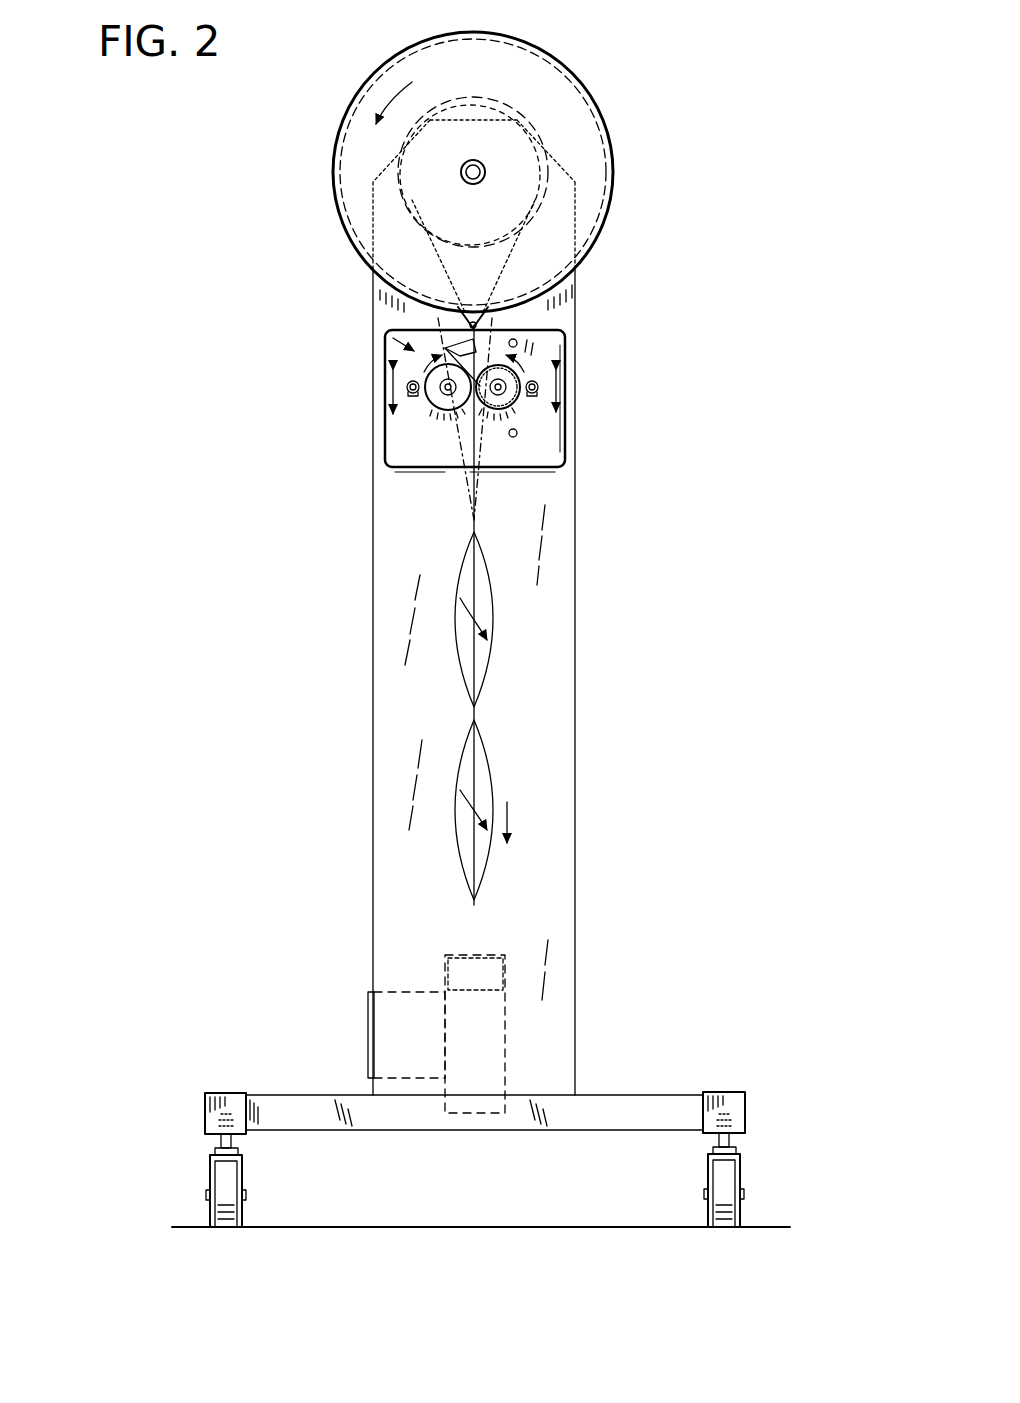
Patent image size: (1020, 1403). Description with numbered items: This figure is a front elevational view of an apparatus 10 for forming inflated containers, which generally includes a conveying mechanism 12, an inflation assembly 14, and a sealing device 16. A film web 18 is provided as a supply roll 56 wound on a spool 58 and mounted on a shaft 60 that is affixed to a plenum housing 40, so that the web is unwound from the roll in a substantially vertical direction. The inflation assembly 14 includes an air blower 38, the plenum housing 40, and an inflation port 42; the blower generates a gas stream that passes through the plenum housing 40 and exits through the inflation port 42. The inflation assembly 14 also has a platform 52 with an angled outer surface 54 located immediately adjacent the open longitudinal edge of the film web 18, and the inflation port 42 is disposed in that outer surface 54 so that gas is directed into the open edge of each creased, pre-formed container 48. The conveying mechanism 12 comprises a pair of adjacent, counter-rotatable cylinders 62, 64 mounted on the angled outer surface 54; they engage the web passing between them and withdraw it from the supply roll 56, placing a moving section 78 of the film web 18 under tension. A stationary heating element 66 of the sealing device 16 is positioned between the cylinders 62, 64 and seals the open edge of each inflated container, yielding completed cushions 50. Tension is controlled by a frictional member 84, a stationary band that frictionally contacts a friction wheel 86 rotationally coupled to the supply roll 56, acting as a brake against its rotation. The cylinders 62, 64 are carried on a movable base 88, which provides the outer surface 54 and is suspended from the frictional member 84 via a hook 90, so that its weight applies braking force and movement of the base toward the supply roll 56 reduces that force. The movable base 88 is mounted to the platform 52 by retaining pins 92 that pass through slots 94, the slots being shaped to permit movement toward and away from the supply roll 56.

The apparatus 10 is at (716, 110).
The conveying mechanism 12 is at (346, 266).
The inflation assembly 14 is at (391, 337).
The sealing device 16 is at (520, 436).
The film web 18 is at (408, 305).
The air blower 38 is at (410, 988).
The plenum housing 40 is at (545, 690).
The inflation port 42 is at (483, 344).
The creased, pre-formed container 48 is at (483, 480).
The cushions 50 is at (490, 612).
The platform 52 is at (388, 437).
The outer surface 54 is at (408, 456).
The supply roll 56 is at (573, 61).
The spool 58 is at (478, 162).
The shaft 60 is at (466, 172).
The cylinder 62 is at (512, 400).
The cylinder 64 is at (449, 411).
The heating element 66 is at (518, 346).
The moving section 78 is at (436, 316).
The frictional member 84 is at (528, 272).
The friction wheel 86 is at (484, 243).
The movable base 88 is at (547, 422).
The hook 90 is at (482, 332).
The retaining pins 92 is at (407, 388).
The slots 94 is at (413, 398).